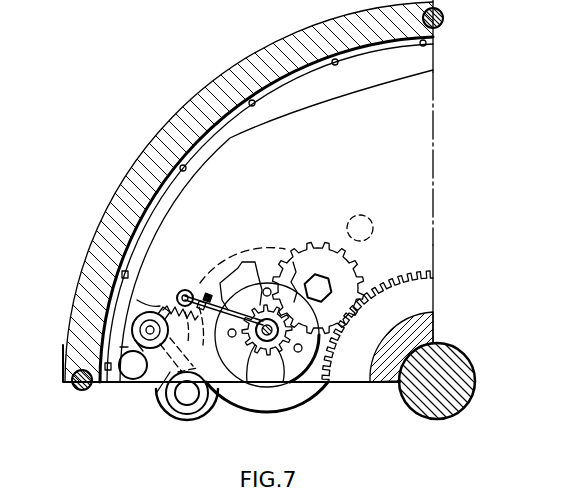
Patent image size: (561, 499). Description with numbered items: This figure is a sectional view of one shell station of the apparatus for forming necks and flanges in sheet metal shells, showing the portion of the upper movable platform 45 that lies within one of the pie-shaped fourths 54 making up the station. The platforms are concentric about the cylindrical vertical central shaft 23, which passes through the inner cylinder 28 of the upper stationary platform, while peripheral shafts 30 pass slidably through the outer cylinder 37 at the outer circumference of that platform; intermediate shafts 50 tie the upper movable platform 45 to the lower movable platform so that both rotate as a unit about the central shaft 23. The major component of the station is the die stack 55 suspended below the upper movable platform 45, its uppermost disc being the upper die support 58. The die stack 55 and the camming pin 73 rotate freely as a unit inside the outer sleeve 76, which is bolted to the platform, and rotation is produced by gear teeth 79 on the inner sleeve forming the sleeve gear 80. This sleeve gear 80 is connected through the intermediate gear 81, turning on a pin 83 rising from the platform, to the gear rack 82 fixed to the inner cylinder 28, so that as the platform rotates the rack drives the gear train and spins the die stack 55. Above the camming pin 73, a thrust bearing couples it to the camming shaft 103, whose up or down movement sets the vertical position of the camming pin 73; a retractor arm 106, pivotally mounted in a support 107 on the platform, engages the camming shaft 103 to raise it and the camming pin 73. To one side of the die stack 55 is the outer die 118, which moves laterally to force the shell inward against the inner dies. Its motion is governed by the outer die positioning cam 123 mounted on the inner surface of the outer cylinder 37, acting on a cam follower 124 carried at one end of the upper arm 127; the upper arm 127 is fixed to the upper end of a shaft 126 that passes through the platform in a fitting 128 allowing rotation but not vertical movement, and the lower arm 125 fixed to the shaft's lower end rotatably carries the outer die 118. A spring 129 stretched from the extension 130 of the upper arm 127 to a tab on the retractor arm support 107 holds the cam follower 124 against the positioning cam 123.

The central shaft 23 is at (472, 371).
The inner cylinder 28 is at (437, 325).
The peripheral shafts 30 is at (443, 20).
The outer cylinder 37 is at (66, 364).
The upper movable platform 45 is at (418, 144).
The intermediate shafts 50 is at (362, 214).
The pie-shaped fourths 54 is at (418, 172).
The die stack 55 is at (310, 387).
The upper die support 58 is at (313, 400).
The camming pin 73 is at (248, 378).
The outer sleeve 76 is at (267, 370).
The gear teeth 79 is at (236, 258).
The sleeve gear 80 is at (256, 306).
The intermediate gear 81 is at (346, 287).
The gear rack 82 is at (436, 268).
The pin 83 is at (322, 281).
The camming shaft 103 is at (289, 372).
The retractor arm 106 is at (213, 277).
The support 107 is at (192, 340).
The outer die 118 is at (194, 426).
The outer die positioning cam 123 is at (436, 62).
The cam follower 124 is at (130, 378).
The lower arm 125 is at (157, 392).
The shaft 126 is at (147, 328).
The upper arm 127 is at (120, 347).
The fitting 128 is at (137, 303).
The spring 129 is at (186, 291).
The extension 130 is at (166, 304).